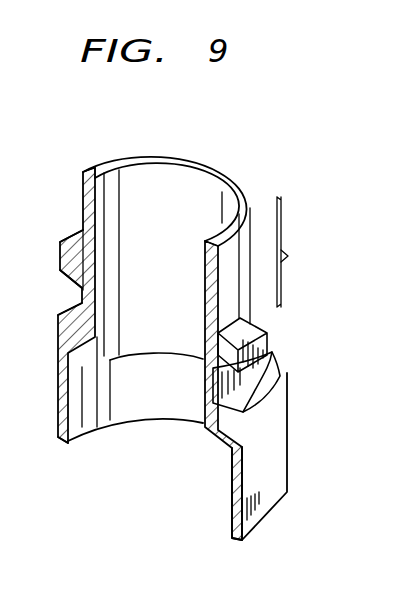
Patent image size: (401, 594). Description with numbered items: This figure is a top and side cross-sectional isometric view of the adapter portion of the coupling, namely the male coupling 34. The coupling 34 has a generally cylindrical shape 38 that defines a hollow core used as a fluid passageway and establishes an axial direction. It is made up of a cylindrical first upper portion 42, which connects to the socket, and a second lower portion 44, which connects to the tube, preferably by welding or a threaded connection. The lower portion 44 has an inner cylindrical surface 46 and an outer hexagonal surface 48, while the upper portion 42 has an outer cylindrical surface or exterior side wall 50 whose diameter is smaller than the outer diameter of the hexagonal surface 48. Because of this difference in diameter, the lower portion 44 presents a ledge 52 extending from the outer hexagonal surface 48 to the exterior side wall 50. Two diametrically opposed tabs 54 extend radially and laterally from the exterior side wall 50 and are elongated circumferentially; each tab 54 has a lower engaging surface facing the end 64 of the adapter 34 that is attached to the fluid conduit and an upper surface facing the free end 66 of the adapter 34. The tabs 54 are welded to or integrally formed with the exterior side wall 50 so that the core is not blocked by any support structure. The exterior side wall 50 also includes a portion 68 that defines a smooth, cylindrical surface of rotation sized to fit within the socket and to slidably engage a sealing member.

The male coupling 34 is at (253, 139).
The generally cylindrical shape 38 is at (125, 415).
The first upper portion 42 is at (83, 197).
The second lower portion 44 is at (270, 503).
The inner cylindrical surface 46 is at (174, 399).
The outer hexagonal surface 48 is at (277, 466).
The exterior side wall 50 is at (247, 229).
The ledge 52 is at (77, 312).
The tab 54 is at (72, 235).
The end 64 is at (97, 428).
The free end 66 is at (140, 157).
The surface of rotation 68 is at (298, 252).